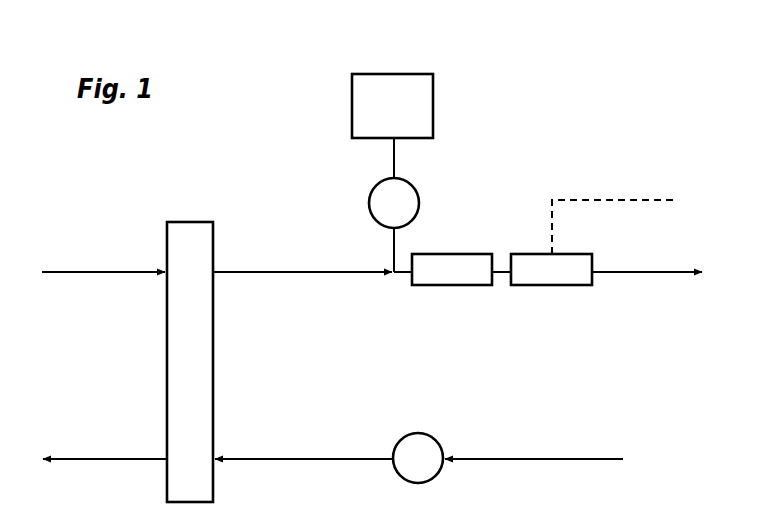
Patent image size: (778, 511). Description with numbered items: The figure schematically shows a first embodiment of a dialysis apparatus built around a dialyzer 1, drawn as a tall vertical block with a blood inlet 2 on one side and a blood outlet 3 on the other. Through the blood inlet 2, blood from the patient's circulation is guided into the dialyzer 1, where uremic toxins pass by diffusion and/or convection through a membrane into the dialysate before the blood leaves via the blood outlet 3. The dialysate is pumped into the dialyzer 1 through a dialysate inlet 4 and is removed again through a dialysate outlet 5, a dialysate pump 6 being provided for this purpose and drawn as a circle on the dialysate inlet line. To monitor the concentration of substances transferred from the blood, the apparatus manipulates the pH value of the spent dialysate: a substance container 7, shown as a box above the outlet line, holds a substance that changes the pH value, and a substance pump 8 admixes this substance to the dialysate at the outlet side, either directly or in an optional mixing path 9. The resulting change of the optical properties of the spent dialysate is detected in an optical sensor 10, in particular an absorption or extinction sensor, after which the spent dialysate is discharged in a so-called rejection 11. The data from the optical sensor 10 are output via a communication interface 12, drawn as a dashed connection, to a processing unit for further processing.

The dialyzer 1 is at (157, 343).
The blood inlet 2 is at (118, 270).
The blood outlet 3 is at (73, 456).
The dialysate inlet 4 is at (298, 455).
The dialysate outlet 5 is at (279, 270).
The dialysate pump 6 is at (393, 438).
The substance container 7 is at (372, 68).
The substance pump 8 is at (367, 204).
The mixing path 9 is at (455, 288).
The optical sensor 10 is at (553, 288).
The rejection 11 is at (651, 274).
The communication interface 12 is at (631, 192).